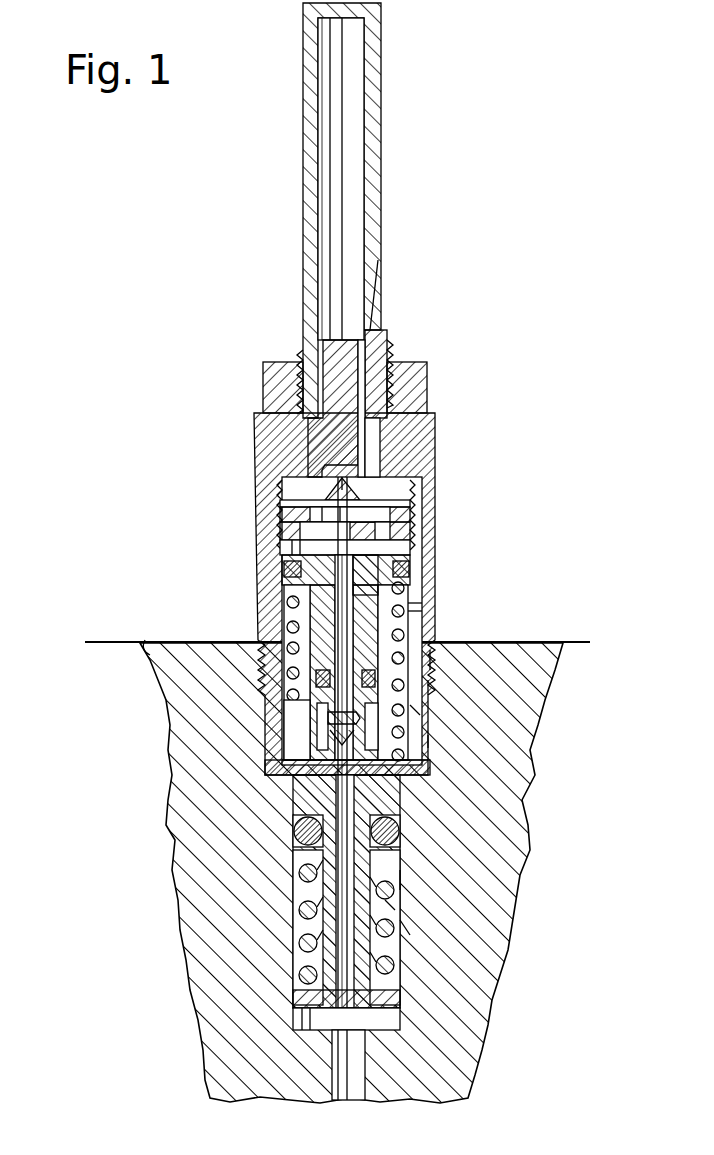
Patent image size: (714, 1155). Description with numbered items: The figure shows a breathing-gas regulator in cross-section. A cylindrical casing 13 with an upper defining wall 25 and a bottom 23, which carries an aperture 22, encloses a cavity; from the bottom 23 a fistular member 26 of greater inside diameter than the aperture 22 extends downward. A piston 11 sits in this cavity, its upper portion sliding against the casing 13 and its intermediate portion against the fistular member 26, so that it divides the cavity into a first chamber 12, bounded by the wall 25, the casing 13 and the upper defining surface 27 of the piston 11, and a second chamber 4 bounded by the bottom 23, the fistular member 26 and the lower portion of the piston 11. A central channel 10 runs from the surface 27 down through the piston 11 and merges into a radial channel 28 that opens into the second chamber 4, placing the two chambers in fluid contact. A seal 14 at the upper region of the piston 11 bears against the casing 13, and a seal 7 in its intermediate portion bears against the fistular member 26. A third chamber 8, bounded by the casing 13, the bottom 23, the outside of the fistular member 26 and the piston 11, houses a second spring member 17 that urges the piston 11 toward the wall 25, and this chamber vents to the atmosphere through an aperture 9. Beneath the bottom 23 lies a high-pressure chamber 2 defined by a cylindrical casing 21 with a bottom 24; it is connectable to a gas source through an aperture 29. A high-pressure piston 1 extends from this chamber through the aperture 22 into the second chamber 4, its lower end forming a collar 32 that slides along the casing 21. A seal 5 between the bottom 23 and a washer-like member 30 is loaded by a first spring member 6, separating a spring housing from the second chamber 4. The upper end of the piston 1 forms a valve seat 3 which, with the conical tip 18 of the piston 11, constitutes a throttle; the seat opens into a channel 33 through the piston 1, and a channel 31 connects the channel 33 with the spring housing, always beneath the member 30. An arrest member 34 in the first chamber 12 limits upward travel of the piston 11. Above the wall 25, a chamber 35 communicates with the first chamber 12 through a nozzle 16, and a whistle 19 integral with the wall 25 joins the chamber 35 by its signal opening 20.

The high-pressure piston 1 is at (410, 950).
The high-pressure chamber 2 is at (405, 880).
The valve seat 3 is at (270, 768).
The second chamber 4 is at (285, 725).
The seal 5 is at (298, 825).
The first spring member 6 is at (300, 912).
The seal 7 is at (430, 660).
The third chamber 8 is at (430, 685).
The aperture 9 is at (424, 614).
The central channel 10 is at (335, 615).
The piston 11 is at (368, 605).
The first chamber 12 is at (410, 548).
The cylindrical casing 13 is at (262, 528).
The seal 14 is at (290, 568).
The nozzle 16 is at (330, 482).
The second spring member 17 is at (287, 602).
The conical tip 18 is at (320, 745).
The whistle 19 is at (328, 332).
The signal opening 20 is at (372, 333).
The cylindrical casing 21 is at (410, 925).
The aperture 22 is at (430, 740).
The bottom 23 is at (420, 762).
The bottom 24 is at (400, 1020).
The upper defining wall 25 is at (290, 503).
The fistular member 26 is at (165, 653).
The upper defining surface 27 is at (290, 545).
The radial channel 28 is at (410, 710).
The aperture 29 is at (352, 1092).
The washer-like member 30 is at (300, 848).
The channel 31 is at (385, 905).
The collar 32 is at (300, 998).
The channel 33 is at (345, 890).
The arrest member 34 is at (290, 515).
The chamber 35 is at (380, 440).